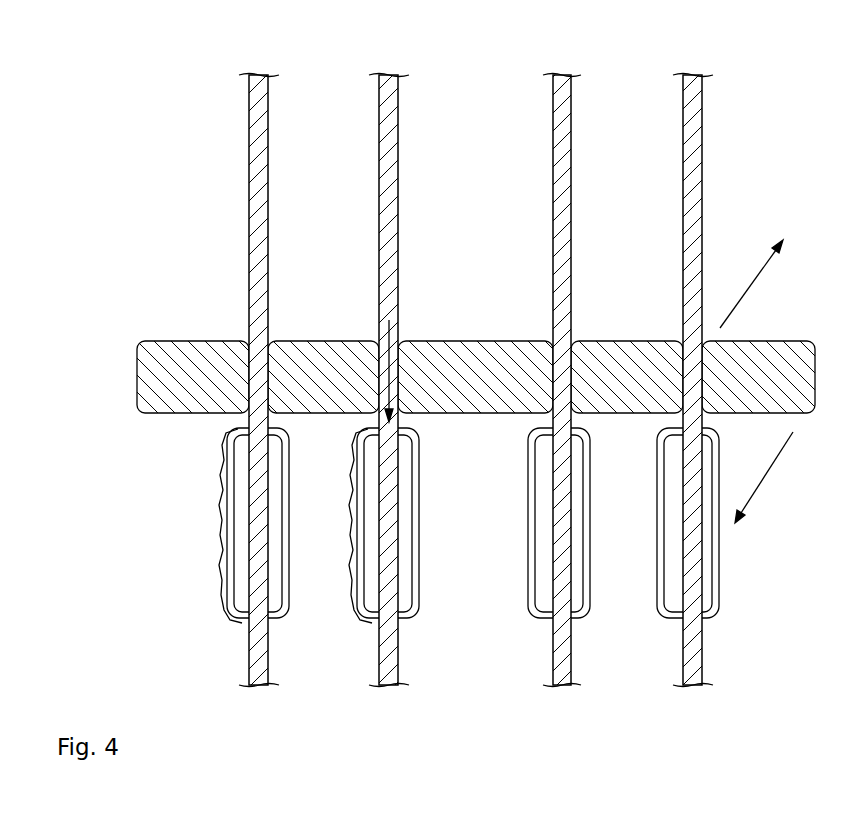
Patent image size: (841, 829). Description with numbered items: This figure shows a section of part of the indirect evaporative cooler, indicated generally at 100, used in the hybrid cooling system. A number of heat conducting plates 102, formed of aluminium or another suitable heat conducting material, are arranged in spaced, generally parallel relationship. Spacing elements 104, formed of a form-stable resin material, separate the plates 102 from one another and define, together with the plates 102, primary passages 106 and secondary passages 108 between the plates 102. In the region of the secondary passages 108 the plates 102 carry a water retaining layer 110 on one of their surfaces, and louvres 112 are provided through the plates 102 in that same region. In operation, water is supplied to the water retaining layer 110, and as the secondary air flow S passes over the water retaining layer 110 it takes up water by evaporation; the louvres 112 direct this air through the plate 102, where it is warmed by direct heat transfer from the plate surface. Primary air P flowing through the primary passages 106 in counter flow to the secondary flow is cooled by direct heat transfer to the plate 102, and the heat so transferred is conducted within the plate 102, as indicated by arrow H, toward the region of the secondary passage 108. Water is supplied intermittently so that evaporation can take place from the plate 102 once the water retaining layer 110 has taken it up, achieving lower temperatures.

The pin assembly 100 is at (96, 128).
The heat conducting plate 102 is at (249, 120).
The spacing element 104 is at (163, 352).
The primary passage 106 is at (327, 153).
The secondary passage 108 is at (322, 613).
The water retaining layer 110 is at (249, 643).
The louvre 112 is at (413, 604).
The arrow H is at (390, 335).
The primary air P is at (751, 284).
The secondary air flow S is at (767, 478).